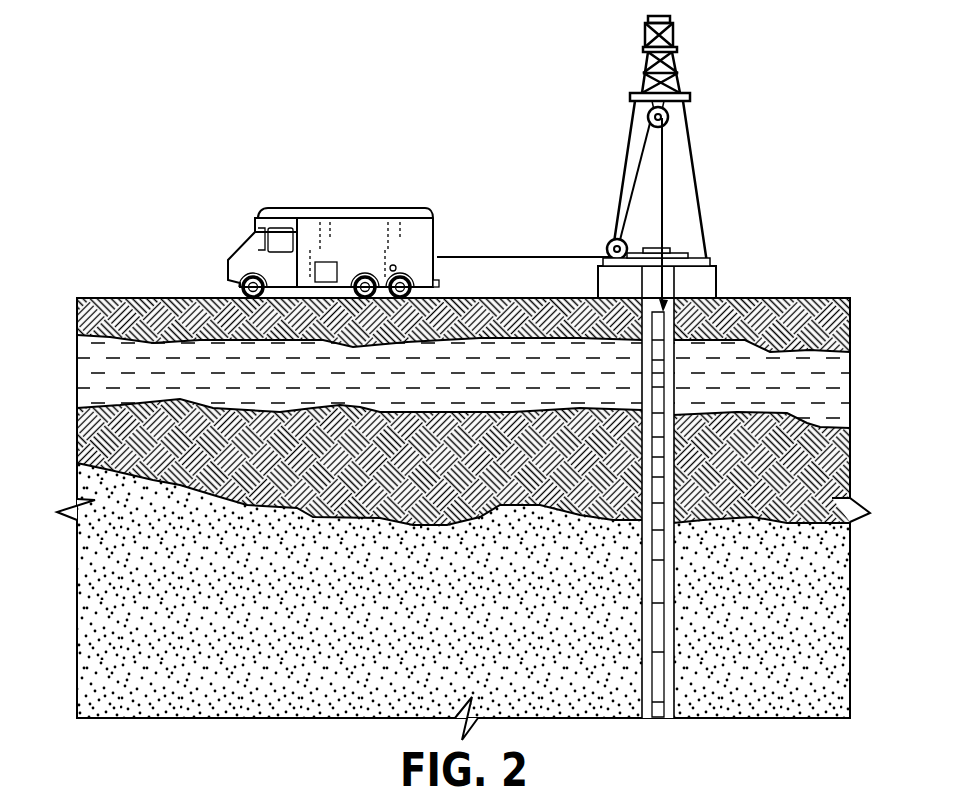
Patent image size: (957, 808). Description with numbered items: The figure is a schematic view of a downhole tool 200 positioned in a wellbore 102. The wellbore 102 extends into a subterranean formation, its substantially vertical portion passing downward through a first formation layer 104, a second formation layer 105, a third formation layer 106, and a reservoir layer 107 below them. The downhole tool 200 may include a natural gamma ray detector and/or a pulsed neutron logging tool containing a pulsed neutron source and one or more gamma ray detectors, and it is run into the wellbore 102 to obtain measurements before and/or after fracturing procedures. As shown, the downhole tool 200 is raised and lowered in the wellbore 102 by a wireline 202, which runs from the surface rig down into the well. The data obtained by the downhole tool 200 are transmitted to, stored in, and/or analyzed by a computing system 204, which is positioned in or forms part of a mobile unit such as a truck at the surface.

The wellbore 102 is at (667, 303).
The first formation layer 104 is at (88, 320).
The second formation layer 105 is at (90, 377).
The third formation layer 106 is at (90, 433).
The reservoir layer 107 is at (92, 582).
The downhole tool 200 is at (658, 688).
The wireline 202 is at (489, 256).
The computing system 204 is at (367, 223).